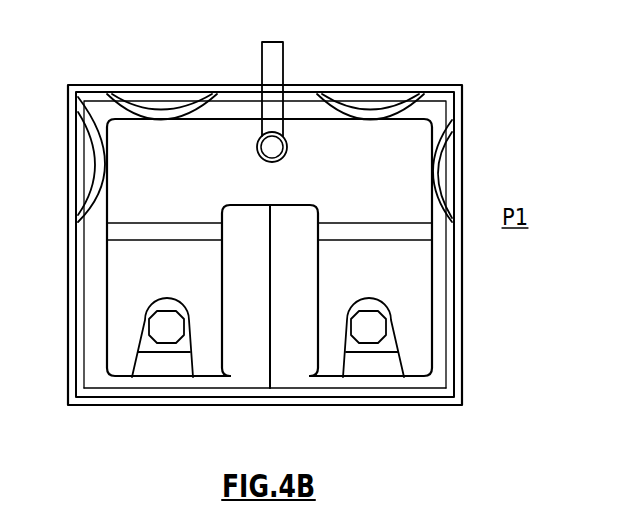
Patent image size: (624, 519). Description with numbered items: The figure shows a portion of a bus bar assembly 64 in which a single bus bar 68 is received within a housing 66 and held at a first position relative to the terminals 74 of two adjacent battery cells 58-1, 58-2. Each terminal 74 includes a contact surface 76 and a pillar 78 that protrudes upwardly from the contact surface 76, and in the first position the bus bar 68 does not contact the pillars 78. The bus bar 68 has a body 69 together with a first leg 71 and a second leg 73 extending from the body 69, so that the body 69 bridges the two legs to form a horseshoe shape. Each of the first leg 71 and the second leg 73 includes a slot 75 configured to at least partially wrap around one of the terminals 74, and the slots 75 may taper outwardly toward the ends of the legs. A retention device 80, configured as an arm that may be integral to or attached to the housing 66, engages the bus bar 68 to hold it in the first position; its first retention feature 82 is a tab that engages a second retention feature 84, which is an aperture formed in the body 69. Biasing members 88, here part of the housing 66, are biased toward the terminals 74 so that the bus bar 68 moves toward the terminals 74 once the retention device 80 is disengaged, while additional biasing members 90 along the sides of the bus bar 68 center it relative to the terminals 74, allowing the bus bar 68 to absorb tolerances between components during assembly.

The bus bar assembly 64 is at (125, 58).
The housing 66 is at (470, 101).
The battery cell 58-1 is at (98, 378).
The battery cell 58-2 is at (386, 370).
The bus bar 68 is at (355, 128).
The body 69 is at (222, 140).
The first leg 71 is at (118, 275).
The second leg 73 is at (418, 275).
The terminal 74 is at (190, 306).
The slot 75 is at (176, 372).
The contact surface 76 is at (148, 343).
The pillar 78 is at (157, 327).
The retention device 80 is at (287, 67).
The first retention feature 82 is at (283, 147).
The second retention feature 84 is at (285, 153).
The biasing member 88 is at (150, 110).
The biasing member 90 is at (95, 125).